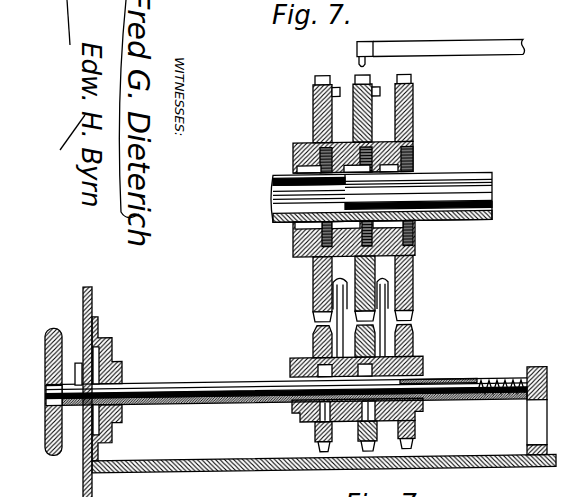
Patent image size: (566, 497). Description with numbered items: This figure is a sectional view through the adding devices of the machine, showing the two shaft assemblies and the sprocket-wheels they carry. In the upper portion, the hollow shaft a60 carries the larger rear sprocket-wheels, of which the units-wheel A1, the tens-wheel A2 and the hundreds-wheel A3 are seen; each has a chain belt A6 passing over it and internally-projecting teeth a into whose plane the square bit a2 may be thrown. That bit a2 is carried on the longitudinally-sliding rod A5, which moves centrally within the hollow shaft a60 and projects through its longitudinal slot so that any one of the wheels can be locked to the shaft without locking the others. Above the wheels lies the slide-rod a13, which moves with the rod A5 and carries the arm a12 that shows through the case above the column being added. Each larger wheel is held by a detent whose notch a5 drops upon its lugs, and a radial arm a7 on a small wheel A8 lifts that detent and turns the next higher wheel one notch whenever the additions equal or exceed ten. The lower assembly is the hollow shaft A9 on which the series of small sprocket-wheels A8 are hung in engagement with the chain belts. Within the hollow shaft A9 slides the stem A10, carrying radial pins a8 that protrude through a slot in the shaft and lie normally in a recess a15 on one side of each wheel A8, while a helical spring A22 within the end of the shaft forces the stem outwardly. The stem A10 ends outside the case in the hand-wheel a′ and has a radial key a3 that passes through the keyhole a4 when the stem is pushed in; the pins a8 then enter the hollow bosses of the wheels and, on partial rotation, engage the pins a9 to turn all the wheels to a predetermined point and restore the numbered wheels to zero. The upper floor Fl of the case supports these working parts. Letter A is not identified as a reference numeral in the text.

The frame body A is at (375, 300).
The units-wheel A1 is at (419, 197).
The tens-wheel A2 is at (368, 117).
The hundreds-wheel A3 is at (313, 104).
The longitudinally-sliding rod A5 is at (493, 193).
The chain belt A6 is at (430, 75).
The sprocket-wheel A8 is at (416, 435).
The hollow shaft A9 is at (210, 402).
The longitudinally-sliding stem A10 is at (162, 388).
The helical spring A22 is at (506, 379).
The internally-projecting teeth a is at (414, 165).
The hand-wheel a′ is at (53, 329).
The square bit a2 is at (370, 178).
The radial key a3 is at (77, 361).
The keyhole a4 is at (98, 362).
The notch a5 is at (435, 289).
The radial arm a7 is at (435, 320).
The radial pins a8 is at (320, 354).
The laterally-projecting pin a9 is at (371, 412).
The arm a12 is at (357, 50).
The slide-rod a13 is at (452, 44).
The recess a15 is at (333, 456).
The hollow shaft a60 is at (282, 181).
The upper floor Fl is at (319, 388).